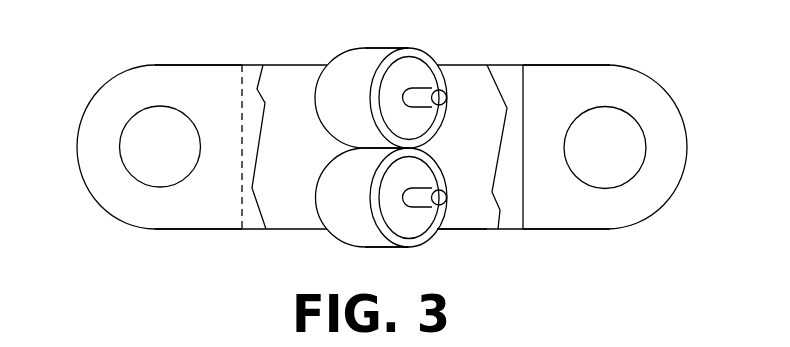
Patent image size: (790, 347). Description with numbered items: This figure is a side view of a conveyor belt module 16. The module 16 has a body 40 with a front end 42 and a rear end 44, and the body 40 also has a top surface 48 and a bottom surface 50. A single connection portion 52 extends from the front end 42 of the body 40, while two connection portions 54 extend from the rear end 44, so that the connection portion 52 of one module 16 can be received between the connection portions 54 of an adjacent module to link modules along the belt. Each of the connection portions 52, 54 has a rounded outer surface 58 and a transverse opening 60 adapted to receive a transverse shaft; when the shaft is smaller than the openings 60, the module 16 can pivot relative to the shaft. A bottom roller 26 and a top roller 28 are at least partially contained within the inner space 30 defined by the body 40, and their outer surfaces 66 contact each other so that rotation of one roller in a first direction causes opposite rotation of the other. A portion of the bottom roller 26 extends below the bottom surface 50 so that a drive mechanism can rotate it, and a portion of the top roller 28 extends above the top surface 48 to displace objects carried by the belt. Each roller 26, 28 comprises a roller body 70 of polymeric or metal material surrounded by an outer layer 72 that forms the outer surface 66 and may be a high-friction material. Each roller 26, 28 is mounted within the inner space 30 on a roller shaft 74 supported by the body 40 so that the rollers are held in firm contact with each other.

The conveyor belt module 16 is at (663, 65).
The bottom roller 26 is at (330, 173).
The top roller 28 is at (330, 122).
The inner space 30 is at (465, 212).
The body 40 is at (250, 81).
The front end 42 is at (548, 80).
The rear end 44 is at (221, 212).
The top surface 48 is at (498, 65).
The bottom surface 50 is at (537, 230).
The connection portion 52 is at (658, 182).
The connection portion 54 is at (106, 182).
The rounded outer surface 58 is at (102, 89).
The transverse opening 60 is at (147, 149).
The outer surface 66 is at (365, 50).
The roller body 70 is at (412, 68).
The outer layer 72 is at (445, 78).
The roller shaft 74 is at (422, 100).